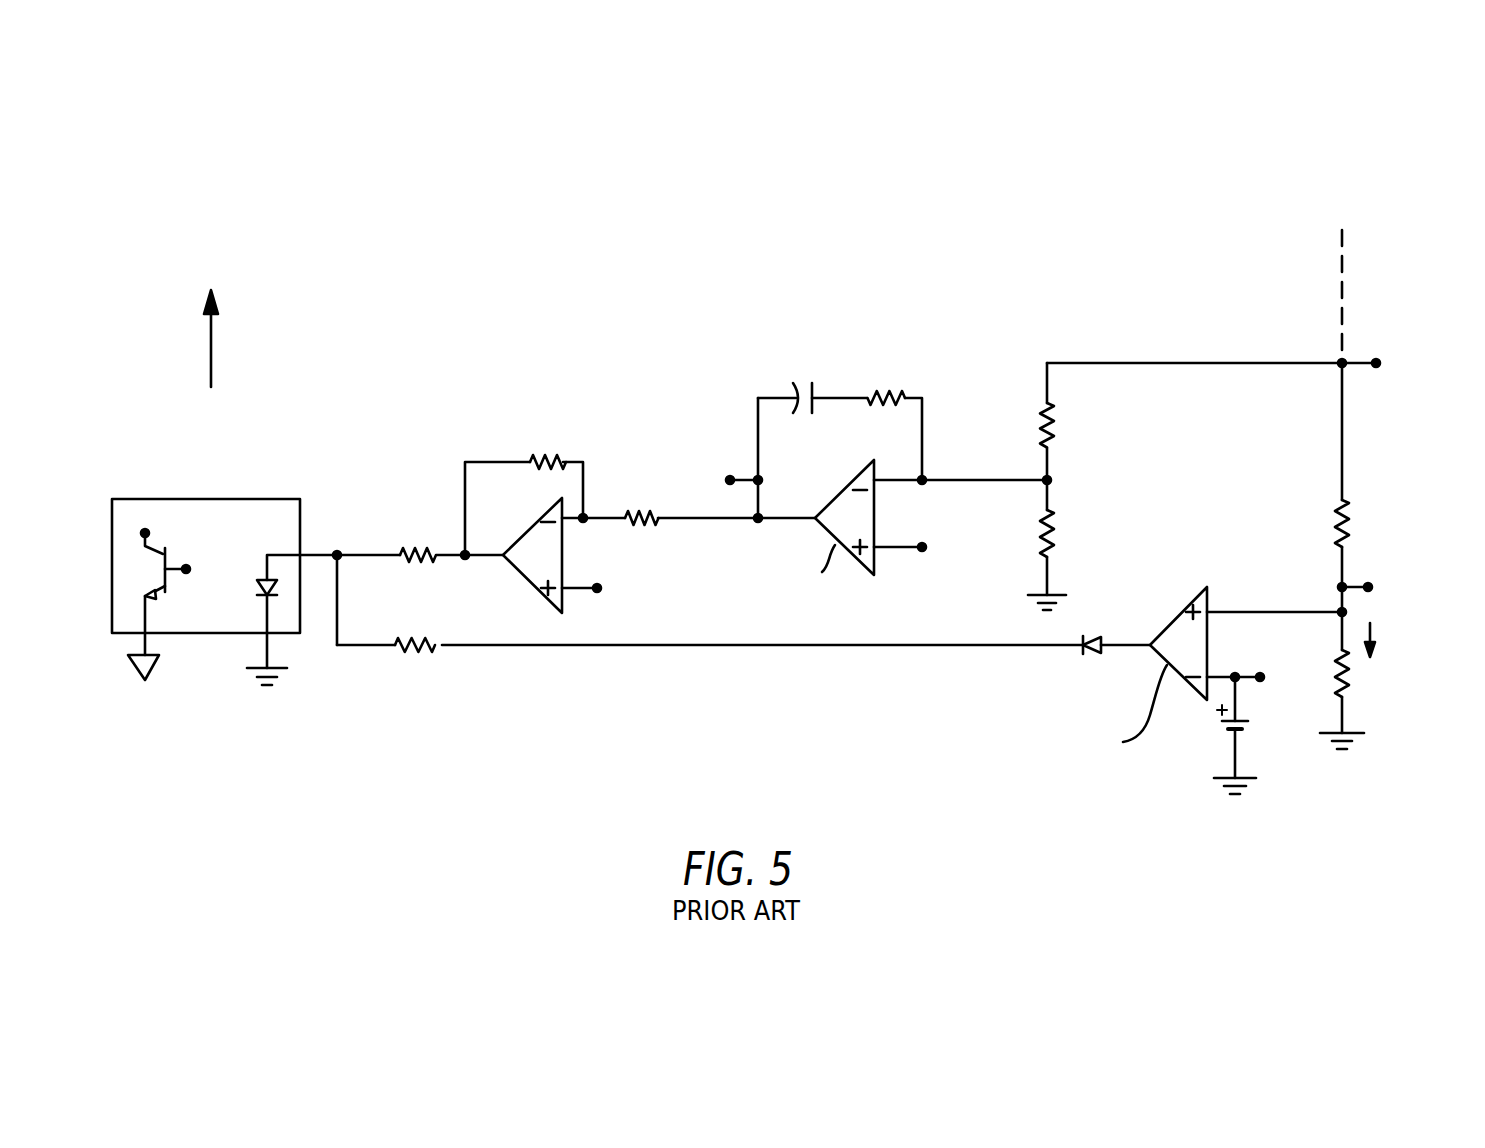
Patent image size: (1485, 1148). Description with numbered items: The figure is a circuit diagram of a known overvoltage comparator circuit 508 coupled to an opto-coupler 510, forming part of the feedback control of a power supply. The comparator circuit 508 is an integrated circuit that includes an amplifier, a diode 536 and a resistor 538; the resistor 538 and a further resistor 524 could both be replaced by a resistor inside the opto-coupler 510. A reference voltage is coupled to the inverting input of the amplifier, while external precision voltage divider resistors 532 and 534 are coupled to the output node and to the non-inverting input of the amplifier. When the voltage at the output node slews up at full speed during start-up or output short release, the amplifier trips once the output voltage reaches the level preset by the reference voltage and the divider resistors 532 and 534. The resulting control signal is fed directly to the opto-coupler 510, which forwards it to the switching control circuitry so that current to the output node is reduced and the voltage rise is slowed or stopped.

The overvoltage comparator circuit 508 is at (1158, 167).
The opto-coupler 510 is at (223, 633).
The resistor 524 is at (437, 548).
The precision voltage divider resistor 532 is at (1345, 500).
The precision voltage divider resistor 534 is at (1350, 672).
The diode 536 is at (1086, 637).
The resistor 538 is at (405, 650).